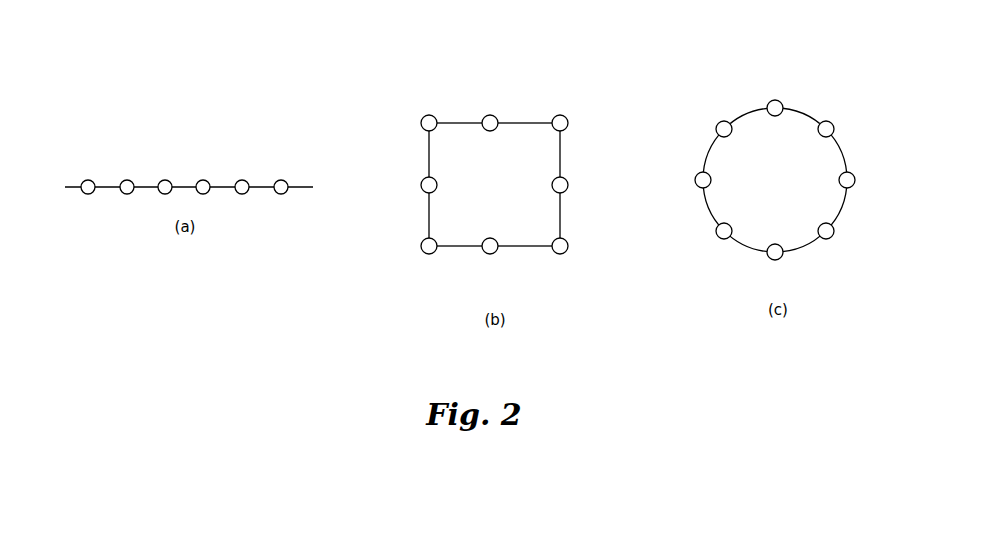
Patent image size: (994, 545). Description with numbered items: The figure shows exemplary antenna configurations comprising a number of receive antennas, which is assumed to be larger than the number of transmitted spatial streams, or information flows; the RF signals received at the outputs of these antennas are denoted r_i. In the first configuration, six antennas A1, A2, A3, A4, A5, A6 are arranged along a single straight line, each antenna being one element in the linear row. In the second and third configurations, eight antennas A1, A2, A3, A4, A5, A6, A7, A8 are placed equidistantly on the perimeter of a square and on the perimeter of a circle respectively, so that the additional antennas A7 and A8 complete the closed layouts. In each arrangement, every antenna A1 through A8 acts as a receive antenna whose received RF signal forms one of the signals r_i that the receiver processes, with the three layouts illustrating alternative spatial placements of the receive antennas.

The antenna A1 is at (429, 136).
The antenna A2 is at (487, 141).
The antenna A3 is at (521, 144).
The antenna A4 is at (530, 200).
The antenna A5 is at (510, 219).
The antenna A6 is at (503, 217).
The antenna A7 is at (556, 227).
The antenna A8 is at (563, 156).